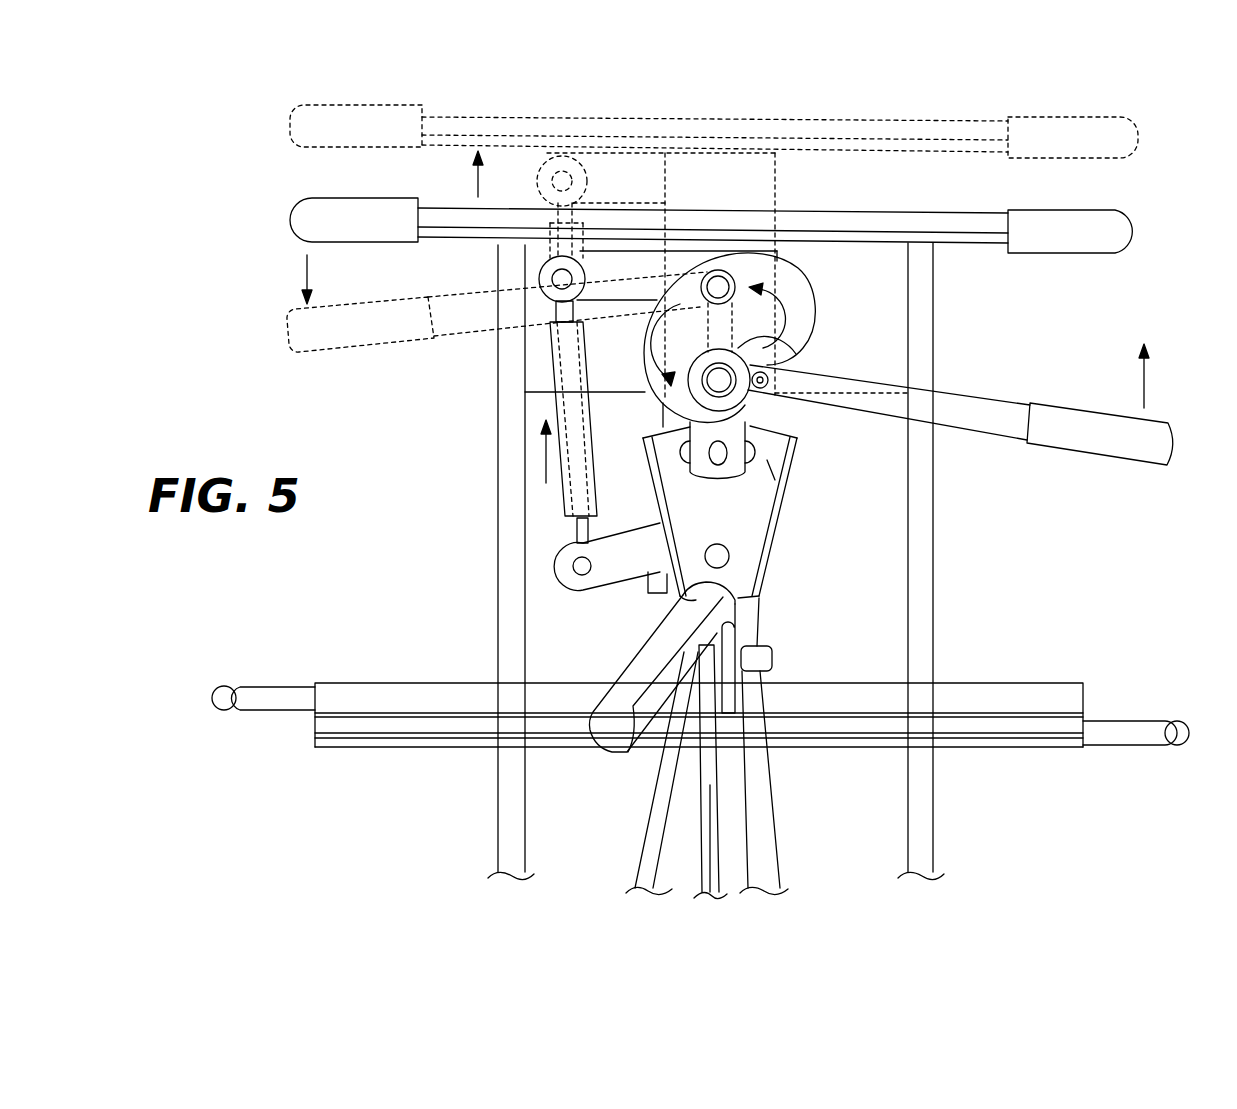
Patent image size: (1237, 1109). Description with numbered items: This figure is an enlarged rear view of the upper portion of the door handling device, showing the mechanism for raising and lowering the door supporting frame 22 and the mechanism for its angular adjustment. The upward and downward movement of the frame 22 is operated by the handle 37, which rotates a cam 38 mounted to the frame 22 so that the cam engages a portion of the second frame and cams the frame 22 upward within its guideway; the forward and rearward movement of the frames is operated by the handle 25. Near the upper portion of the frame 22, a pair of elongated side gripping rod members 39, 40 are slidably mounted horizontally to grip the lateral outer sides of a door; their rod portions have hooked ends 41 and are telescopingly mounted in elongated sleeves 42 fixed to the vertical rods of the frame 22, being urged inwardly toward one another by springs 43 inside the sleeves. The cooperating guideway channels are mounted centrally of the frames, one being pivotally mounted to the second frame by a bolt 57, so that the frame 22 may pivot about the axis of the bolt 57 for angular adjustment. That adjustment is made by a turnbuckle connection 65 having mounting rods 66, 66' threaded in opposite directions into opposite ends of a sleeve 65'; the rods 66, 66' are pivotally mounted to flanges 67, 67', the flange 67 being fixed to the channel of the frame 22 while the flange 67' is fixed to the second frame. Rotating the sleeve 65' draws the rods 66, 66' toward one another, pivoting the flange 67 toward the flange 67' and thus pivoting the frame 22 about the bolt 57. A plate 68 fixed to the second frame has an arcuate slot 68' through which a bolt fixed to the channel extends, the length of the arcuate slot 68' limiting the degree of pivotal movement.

The frame 22 is at (928, 588).
The handle 25 is at (724, 608).
The handle 37 is at (350, 347).
The cam 38 is at (813, 303).
The side gripping rod member 39 is at (1111, 720).
The side gripping rod member 40 is at (279, 683).
The hooked end 41 is at (800, 356).
The sleeve 42 is at (817, 690).
The spring 43 is at (737, 272).
The bolt 57 is at (731, 553).
The turnbuckle connection 65 is at (524, 419).
The sleeve 65' is at (508, 370).
The mounting rod 66 is at (521, 316).
The mounting rod 66' is at (519, 548).
The flange 67 is at (677, 239).
The flange 67' is at (603, 587).
The plate 68 is at (746, 511).
The arcuate slot 68' is at (800, 480).